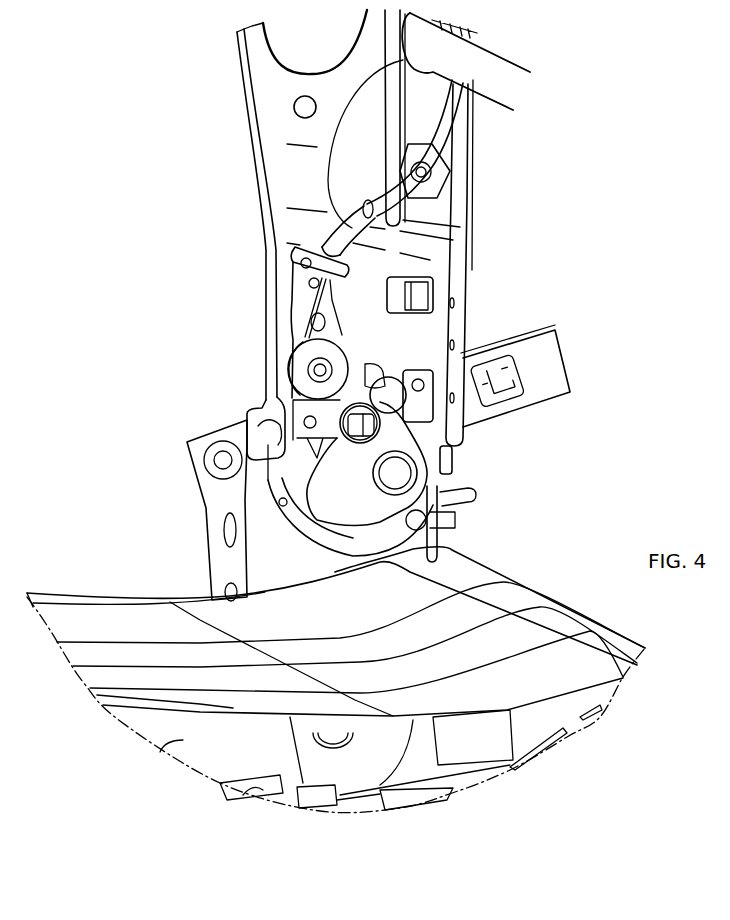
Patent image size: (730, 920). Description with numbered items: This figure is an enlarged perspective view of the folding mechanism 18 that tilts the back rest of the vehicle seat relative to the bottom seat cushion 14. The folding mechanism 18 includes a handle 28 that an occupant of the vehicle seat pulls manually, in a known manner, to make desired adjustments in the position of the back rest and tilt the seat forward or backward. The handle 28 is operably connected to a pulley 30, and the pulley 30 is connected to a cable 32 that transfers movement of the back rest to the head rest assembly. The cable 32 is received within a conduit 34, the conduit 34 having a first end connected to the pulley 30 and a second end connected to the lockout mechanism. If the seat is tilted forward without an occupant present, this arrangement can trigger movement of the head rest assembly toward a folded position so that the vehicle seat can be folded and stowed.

The bottom seat cushion 14 is at (341, 626).
The folding mechanism 18 is at (220, 346).
The handle 28 is at (537, 395).
The pulley 30 is at (468, 462).
The cable 32 is at (328, 298).
The conduit 34 is at (437, 123).